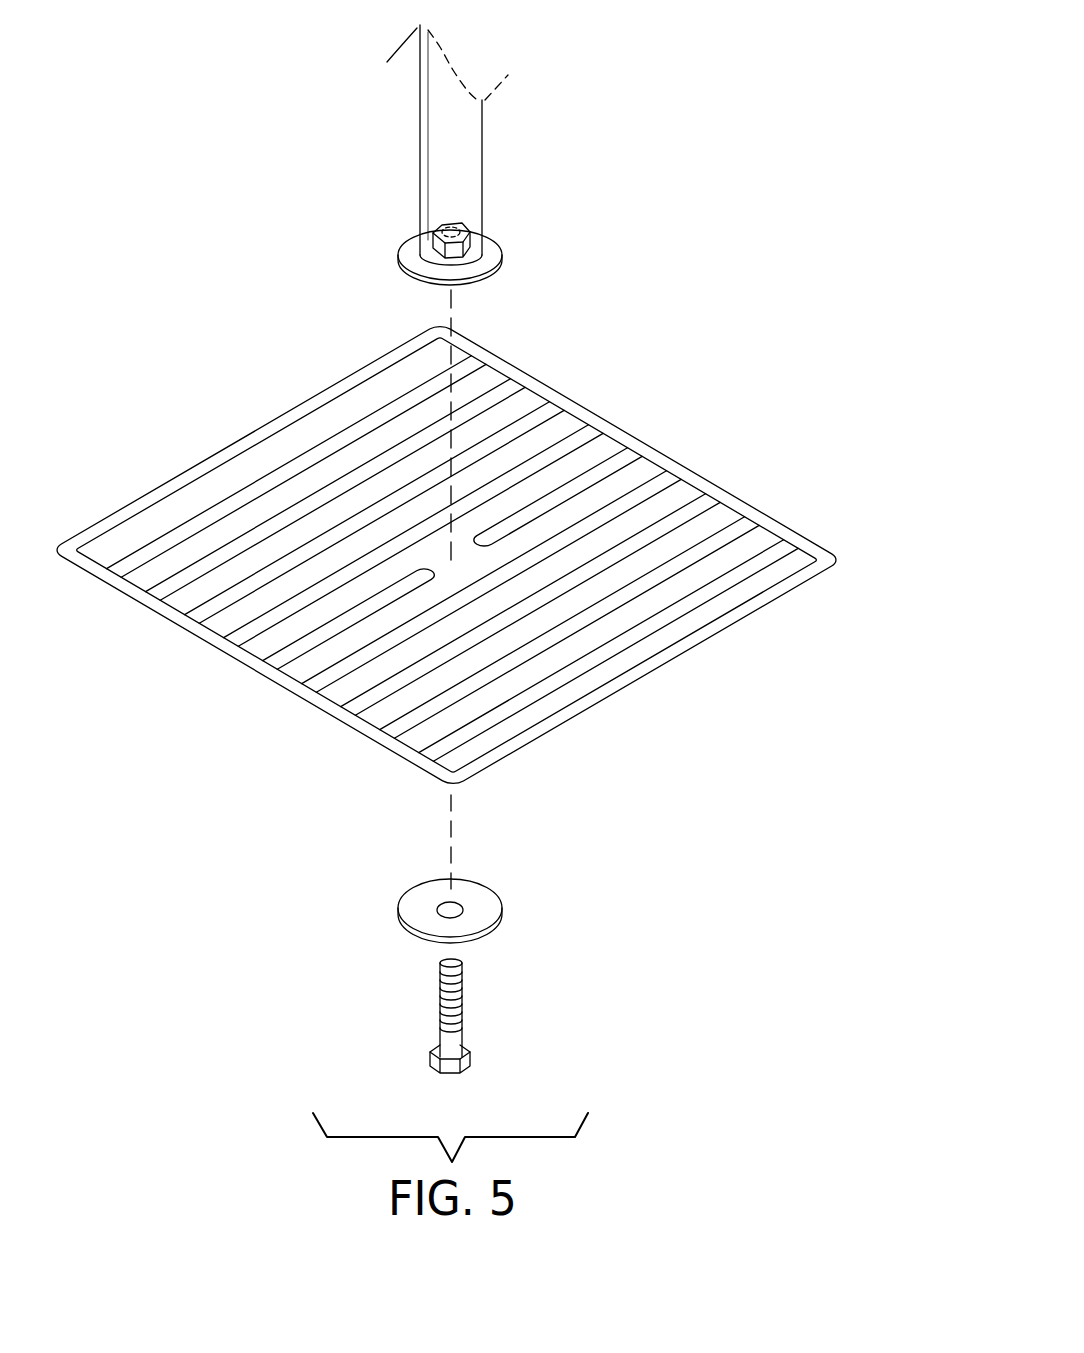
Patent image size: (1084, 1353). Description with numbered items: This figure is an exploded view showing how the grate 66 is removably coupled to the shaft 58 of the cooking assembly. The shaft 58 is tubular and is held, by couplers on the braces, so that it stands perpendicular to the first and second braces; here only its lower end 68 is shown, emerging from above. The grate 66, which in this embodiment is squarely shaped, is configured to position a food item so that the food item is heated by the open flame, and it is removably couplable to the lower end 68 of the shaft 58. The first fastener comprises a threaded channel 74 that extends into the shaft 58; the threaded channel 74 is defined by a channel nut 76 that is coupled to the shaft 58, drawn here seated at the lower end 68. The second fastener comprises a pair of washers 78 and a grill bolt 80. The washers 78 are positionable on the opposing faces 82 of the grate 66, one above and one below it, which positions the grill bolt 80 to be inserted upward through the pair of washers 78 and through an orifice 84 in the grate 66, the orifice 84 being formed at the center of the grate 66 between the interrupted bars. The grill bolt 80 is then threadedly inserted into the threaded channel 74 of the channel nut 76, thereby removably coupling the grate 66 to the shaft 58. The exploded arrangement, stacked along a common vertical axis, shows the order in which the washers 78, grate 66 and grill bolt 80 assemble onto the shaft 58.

The shaft 58 is at (483, 140).
The grate 66 is at (497, 555).
The lower end 68 is at (415, 263).
The threaded channel 74 is at (452, 230).
The channel nut 76 is at (470, 240).
The washers 78 is at (420, 273).
The grill bolt 80 is at (463, 1005).
The opposing faces 82 is at (446, 555).
The orifice 84 is at (455, 556).